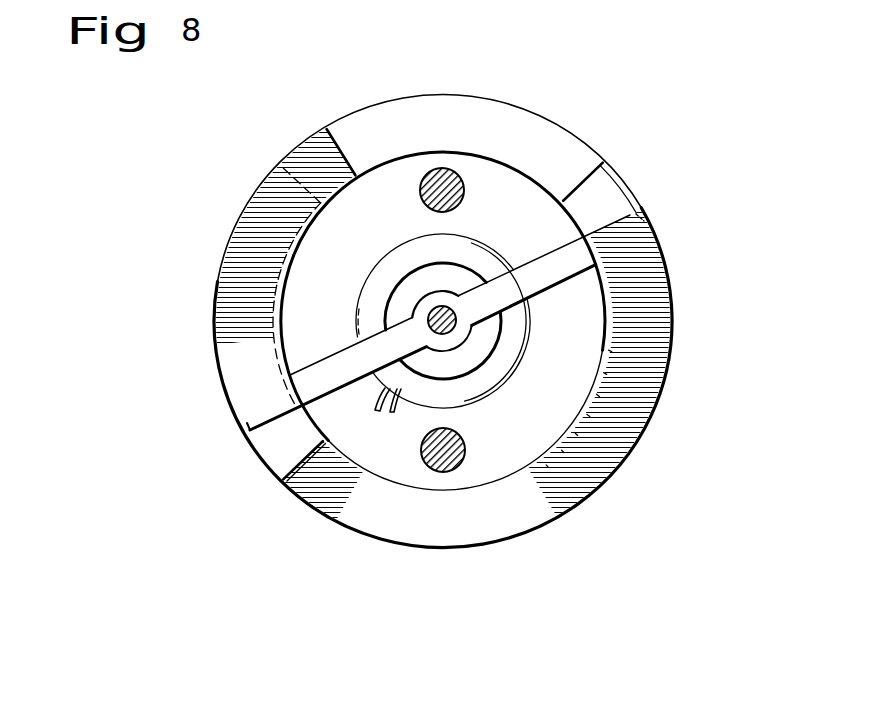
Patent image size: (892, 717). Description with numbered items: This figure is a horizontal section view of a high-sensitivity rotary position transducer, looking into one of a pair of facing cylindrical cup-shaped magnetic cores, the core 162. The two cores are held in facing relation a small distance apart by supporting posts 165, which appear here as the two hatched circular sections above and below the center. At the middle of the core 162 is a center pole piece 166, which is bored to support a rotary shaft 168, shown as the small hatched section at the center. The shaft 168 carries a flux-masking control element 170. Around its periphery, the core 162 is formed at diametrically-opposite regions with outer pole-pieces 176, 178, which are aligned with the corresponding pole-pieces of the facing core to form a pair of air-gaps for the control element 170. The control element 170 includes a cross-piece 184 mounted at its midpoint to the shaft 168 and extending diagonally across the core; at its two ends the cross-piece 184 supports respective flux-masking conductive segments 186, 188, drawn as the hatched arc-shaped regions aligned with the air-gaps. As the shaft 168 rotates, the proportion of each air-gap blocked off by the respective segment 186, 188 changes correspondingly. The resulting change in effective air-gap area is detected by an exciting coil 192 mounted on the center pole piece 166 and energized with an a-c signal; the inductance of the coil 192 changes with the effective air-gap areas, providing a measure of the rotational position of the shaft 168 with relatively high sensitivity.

The cylindrical cup-shaped magnetic core 162 is at (524, 94).
The supporting posts 165 is at (453, 205).
The center pole piece 166 is at (478, 338).
The rotary shaft 168 is at (439, 307).
The flux-masking control element 170 is at (333, 394).
The outer pole-piece 176 is at (278, 442).
The outer pole-piece 178 is at (602, 198).
The cross-piece 184 is at (545, 276).
The flux-masking segment 186 is at (257, 253).
The flux-masking segment 188 is at (637, 335).
The exciting coil 192 is at (497, 373).